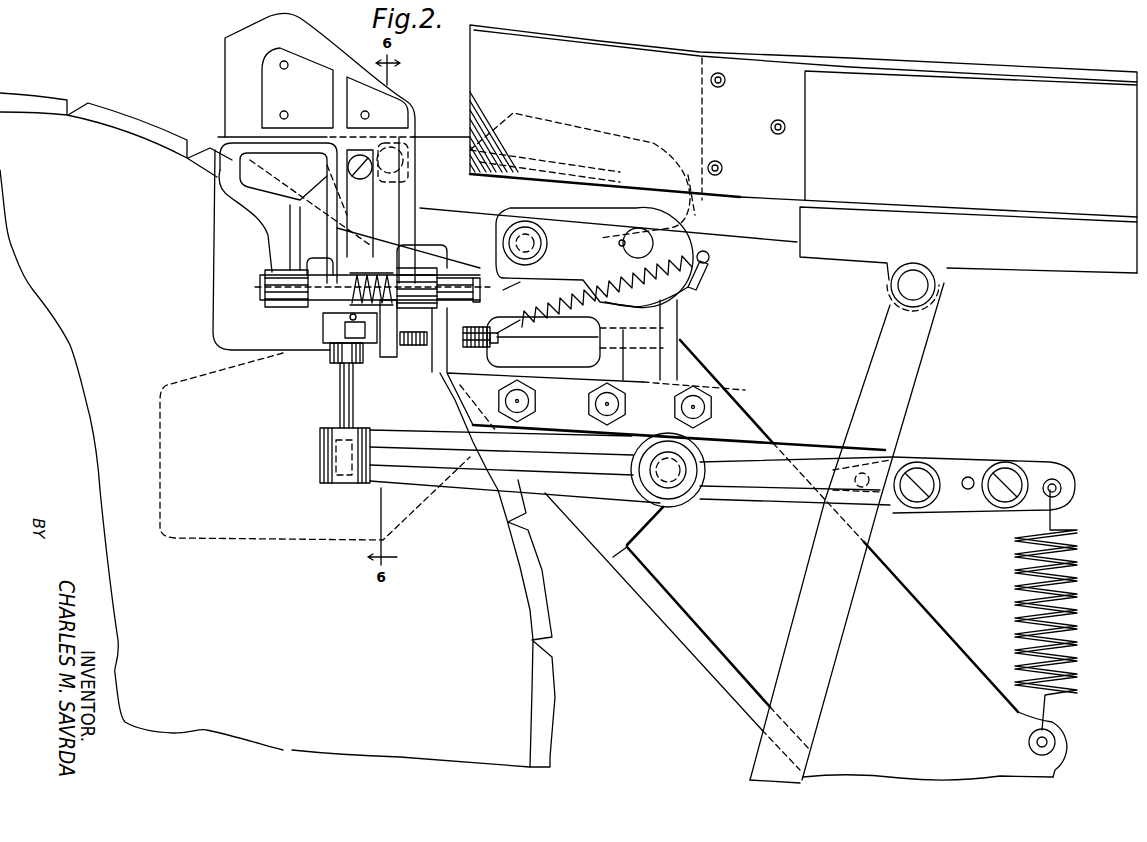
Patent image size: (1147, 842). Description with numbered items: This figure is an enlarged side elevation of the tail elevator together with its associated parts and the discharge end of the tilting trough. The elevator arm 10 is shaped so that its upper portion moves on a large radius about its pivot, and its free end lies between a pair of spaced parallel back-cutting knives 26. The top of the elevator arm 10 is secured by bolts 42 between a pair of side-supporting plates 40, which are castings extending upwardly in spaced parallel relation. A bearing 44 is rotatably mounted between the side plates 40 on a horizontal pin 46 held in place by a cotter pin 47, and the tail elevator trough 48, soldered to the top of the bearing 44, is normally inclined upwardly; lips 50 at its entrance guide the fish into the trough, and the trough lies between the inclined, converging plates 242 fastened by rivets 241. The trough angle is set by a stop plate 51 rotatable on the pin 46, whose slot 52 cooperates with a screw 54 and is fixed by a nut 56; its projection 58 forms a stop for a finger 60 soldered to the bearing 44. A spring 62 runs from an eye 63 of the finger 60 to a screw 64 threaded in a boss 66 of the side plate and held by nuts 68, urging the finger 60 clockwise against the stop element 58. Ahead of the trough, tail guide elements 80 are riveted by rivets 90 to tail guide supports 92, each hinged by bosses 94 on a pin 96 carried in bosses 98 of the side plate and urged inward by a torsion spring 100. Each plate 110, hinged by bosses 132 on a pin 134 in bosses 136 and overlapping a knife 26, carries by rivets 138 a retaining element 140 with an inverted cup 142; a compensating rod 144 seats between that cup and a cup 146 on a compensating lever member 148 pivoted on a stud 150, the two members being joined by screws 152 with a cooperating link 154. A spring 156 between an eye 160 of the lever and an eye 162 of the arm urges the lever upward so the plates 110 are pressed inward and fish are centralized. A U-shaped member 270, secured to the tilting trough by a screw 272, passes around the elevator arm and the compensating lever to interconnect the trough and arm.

The elevator arm 10 is at (707, 675).
The back-cutting knives 26 is at (550, 696).
The side-supporting plates 40 is at (252, 231).
The bolts 42 is at (533, 399).
The bearing 44 is at (690, 226).
The horizontal pin 46 is at (626, 241).
The cotter pin 47 is at (620, 246).
The tail elevator trough 48 is at (612, 150).
The lips 50 is at (690, 200).
The stop plate 51 is at (514, 292).
The slot 52 is at (532, 264).
The screw 54 is at (542, 237).
The nut 56 is at (545, 251).
The projection 58 is at (688, 292).
The finger 60 is at (709, 258).
The spring 62 is at (607, 300).
The eye 63 is at (706, 275).
The screw 64 is at (490, 347).
The boss 66 is at (414, 350).
The nuts 68 is at (490, 318).
The tail guide elements 80 is at (226, 65).
The rivets 90 is at (284, 69).
The tail guide support 92 is at (262, 95).
The bosses 94 is at (440, 268).
The pin 96 is at (262, 288).
The bosses 98 is at (282, 308).
The torsion spring 100 is at (378, 272).
The plate 110 is at (212, 312).
The bosses 132 is at (625, 334).
The pin 134 is at (545, 338).
The bosses 136 is at (673, 356).
The rivets 138 is at (335, 324).
The retaining element 140 is at (332, 350).
The inverted cup 142 is at (340, 368).
The compensating rod 144 is at (353, 399).
The cup 146 is at (320, 447).
The compensating lever member 148 is at (490, 482).
The stud 150 is at (668, 480).
The screws 152 is at (990, 502).
The link 154 is at (950, 472).
The spring 156 is at (1077, 630).
The eye 160 is at (1062, 488).
The eye 162 is at (1056, 742).
The rivets 241 is at (720, 87).
The plate 242 is at (607, 58).
The U-shaped member 270 is at (1046, 262).
The screw 272 is at (901, 284).